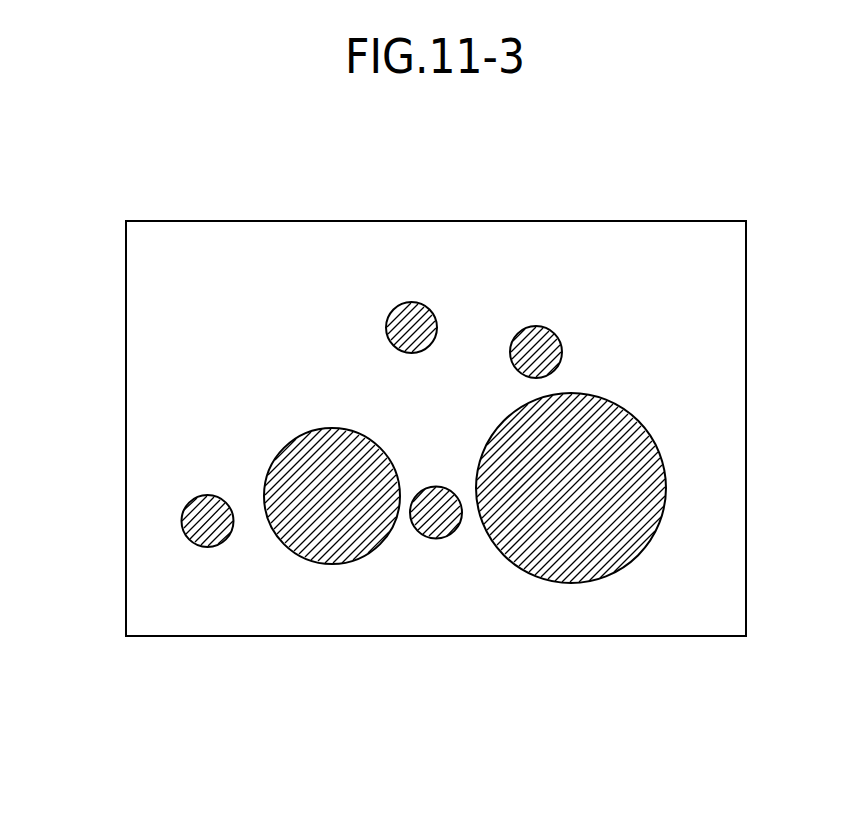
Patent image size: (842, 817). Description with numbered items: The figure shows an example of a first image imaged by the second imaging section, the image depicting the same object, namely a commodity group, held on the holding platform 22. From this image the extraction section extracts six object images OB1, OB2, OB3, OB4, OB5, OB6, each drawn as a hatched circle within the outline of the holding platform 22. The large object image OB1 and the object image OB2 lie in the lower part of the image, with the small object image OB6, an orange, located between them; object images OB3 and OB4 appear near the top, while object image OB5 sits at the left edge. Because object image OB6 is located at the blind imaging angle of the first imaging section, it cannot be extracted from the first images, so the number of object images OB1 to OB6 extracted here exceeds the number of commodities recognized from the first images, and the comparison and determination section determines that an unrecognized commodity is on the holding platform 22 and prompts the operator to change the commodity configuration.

The holding platform 22 is at (692, 221).
The object image OB1 is at (618, 572).
The object image OB2 is at (335, 564).
The object image OB3 is at (537, 326).
The object image OB4 is at (413, 302).
The object image OB5 is at (182, 520).
The object image OB6 is at (437, 538).